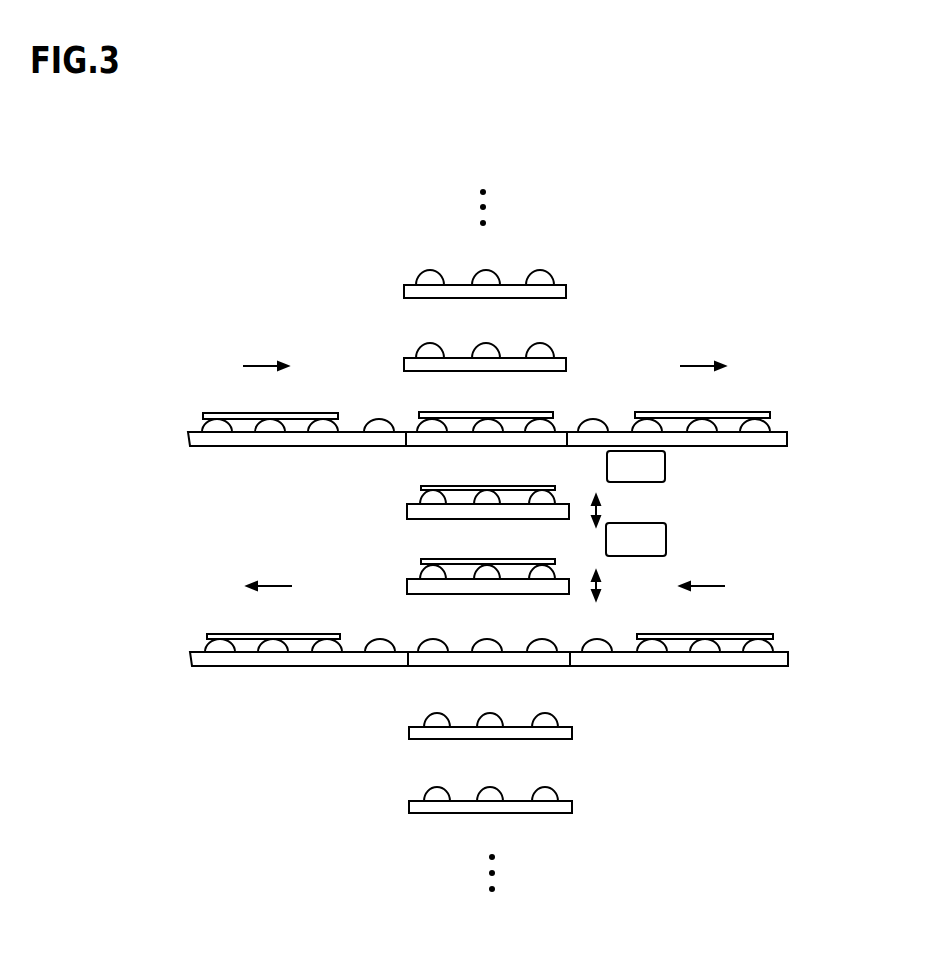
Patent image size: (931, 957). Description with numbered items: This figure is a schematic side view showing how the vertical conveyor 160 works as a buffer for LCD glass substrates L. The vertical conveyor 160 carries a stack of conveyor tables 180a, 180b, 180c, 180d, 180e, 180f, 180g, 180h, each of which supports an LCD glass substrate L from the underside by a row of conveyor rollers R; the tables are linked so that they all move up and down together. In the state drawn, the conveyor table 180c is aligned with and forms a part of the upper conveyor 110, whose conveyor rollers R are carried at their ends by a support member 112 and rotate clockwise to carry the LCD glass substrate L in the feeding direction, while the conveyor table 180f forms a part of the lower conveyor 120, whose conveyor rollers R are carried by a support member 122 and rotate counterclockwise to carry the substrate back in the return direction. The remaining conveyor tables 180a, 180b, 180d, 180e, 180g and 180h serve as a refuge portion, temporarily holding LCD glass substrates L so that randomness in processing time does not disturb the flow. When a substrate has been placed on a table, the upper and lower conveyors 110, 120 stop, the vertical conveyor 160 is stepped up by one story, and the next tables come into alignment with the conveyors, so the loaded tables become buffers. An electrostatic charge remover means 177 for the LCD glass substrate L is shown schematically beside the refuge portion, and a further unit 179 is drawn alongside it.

The upper conveyor 110 is at (735, 447).
The support member 112 is at (212, 449).
The lower conveyor 120 is at (740, 668).
The support member 122 is at (222, 668).
The vertical conveyor 160 is at (441, 834).
The electrostatic charge remover means 177 is at (665, 466).
The transfer unit 179 is at (666, 540).
The conveyor table 180a is at (568, 284).
The conveyor table 180b is at (568, 357).
The conveyor table 180c is at (564, 425).
The conveyor table 180d is at (407, 511).
The conveyor table 180e is at (407, 584).
The conveyor table 180f is at (555, 667).
The conveyor table 180g is at (573, 733).
The conveyor table 180h is at (574, 806).
The LCD glass substrate L is at (706, 633).
The conveyor roller R is at (770, 646).